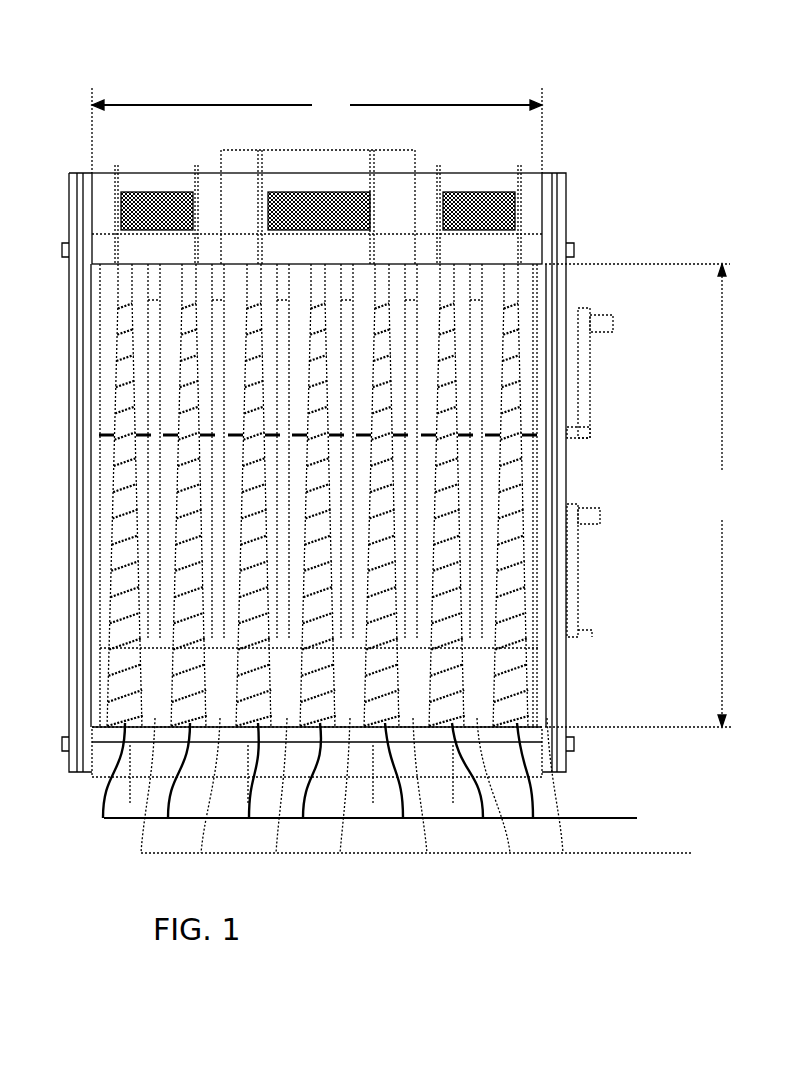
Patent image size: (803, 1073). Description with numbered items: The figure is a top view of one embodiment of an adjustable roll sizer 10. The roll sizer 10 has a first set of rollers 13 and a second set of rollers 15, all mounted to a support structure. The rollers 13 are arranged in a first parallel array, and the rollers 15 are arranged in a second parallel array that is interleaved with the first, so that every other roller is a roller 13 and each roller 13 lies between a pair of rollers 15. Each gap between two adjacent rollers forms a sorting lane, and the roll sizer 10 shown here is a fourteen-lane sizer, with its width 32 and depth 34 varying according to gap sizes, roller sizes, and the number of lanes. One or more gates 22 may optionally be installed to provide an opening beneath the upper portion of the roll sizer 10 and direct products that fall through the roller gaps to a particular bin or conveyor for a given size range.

The adjustable roll sizer 10 is at (332, 45).
The rollers 13 is at (97, 718).
The rollers 15 is at (386, 778).
The gate 22 is at (114, 435).
The width 32 is at (317, 130).
The depth 34 is at (641, 495).